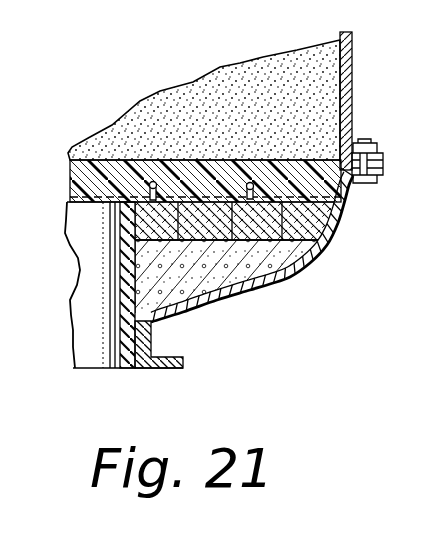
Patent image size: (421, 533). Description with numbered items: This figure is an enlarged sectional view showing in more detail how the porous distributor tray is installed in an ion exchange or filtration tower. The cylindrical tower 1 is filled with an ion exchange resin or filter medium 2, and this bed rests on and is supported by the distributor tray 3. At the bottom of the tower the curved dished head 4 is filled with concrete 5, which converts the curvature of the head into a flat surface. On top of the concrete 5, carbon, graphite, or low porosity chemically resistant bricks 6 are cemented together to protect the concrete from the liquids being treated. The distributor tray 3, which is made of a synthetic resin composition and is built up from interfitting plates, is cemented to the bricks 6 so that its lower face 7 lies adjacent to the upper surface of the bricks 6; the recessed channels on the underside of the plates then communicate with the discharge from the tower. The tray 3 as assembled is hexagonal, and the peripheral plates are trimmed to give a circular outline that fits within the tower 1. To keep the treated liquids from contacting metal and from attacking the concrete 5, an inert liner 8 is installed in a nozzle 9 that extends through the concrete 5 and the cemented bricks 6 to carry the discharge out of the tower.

The cylindrical tower 1 is at (347, 113).
The ion exchange resin or filter medium 2 is at (258, 67).
The distributor tray 3 is at (333, 180).
The dished head 4 is at (268, 280).
The concrete 5 is at (230, 280).
The bricks 6 is at (310, 220).
The lower face 7 is at (103, 213).
The inert liner 8 is at (132, 358).
The nozzle 9 is at (175, 365).